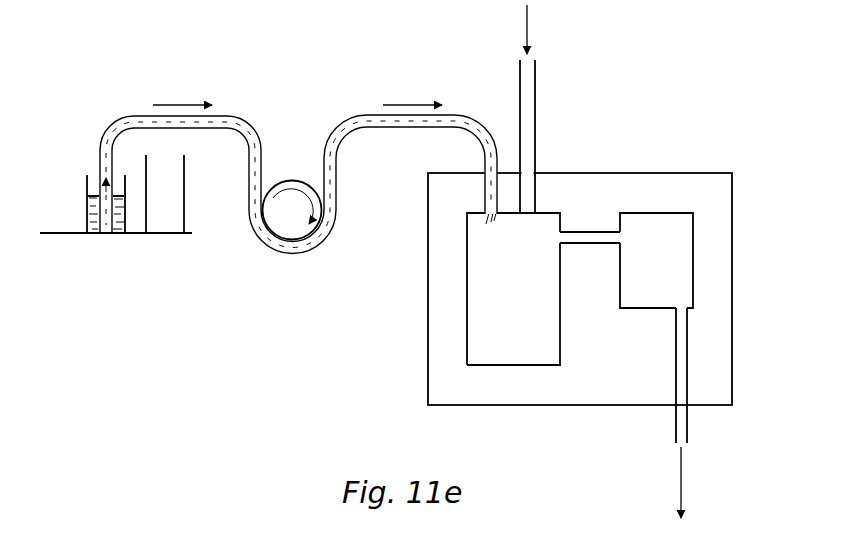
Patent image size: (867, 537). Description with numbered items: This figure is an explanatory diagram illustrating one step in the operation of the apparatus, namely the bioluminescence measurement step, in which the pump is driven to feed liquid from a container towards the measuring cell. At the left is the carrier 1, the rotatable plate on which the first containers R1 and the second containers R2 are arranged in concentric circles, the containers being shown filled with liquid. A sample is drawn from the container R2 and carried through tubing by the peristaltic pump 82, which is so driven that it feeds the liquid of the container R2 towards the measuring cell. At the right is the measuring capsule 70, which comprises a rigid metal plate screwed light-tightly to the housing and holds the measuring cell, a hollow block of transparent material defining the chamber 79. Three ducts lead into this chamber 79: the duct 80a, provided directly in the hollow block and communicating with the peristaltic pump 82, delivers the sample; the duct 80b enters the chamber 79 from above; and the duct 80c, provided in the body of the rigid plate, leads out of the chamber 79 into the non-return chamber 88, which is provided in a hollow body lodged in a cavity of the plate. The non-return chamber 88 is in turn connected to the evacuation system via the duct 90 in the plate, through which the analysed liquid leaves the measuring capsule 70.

The carrier 1 is at (57, 227).
The first containers R1 is at (187, 195).
The second containers R2 is at (84, 200).
The peristaltic pump 82 is at (297, 187).
The duct 80a is at (478, 120).
The duct 80b is at (530, 95).
The duct 80c is at (583, 230).
The measuring capsule 70 is at (412, 360).
The chamber 79 is at (503, 353).
The non-return chamber 88 is at (677, 260).
The duct 90 is at (683, 362).